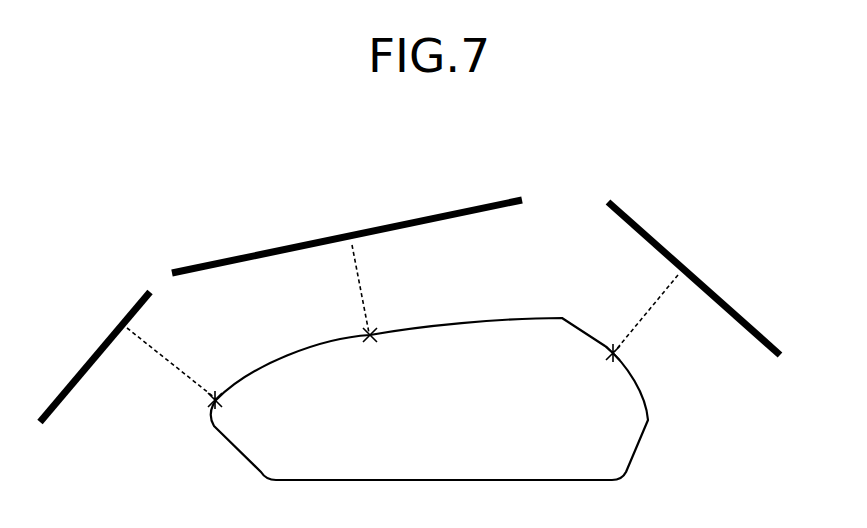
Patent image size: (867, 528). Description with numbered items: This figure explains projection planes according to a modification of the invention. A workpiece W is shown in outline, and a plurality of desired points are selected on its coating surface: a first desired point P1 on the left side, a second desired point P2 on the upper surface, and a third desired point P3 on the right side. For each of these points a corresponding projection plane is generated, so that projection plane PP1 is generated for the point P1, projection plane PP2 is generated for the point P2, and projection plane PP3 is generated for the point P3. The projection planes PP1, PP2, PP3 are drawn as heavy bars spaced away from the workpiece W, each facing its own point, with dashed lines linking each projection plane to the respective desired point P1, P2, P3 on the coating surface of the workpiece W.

The workpiece W is at (676, 447).
The projection plane PP1 is at (115, 327).
The projection plane PP2 is at (462, 207).
The projection plane PP3 is at (748, 318).
The desired point P1 is at (213, 403).
The desired point P2 is at (372, 330).
The desired point P3 is at (620, 353).